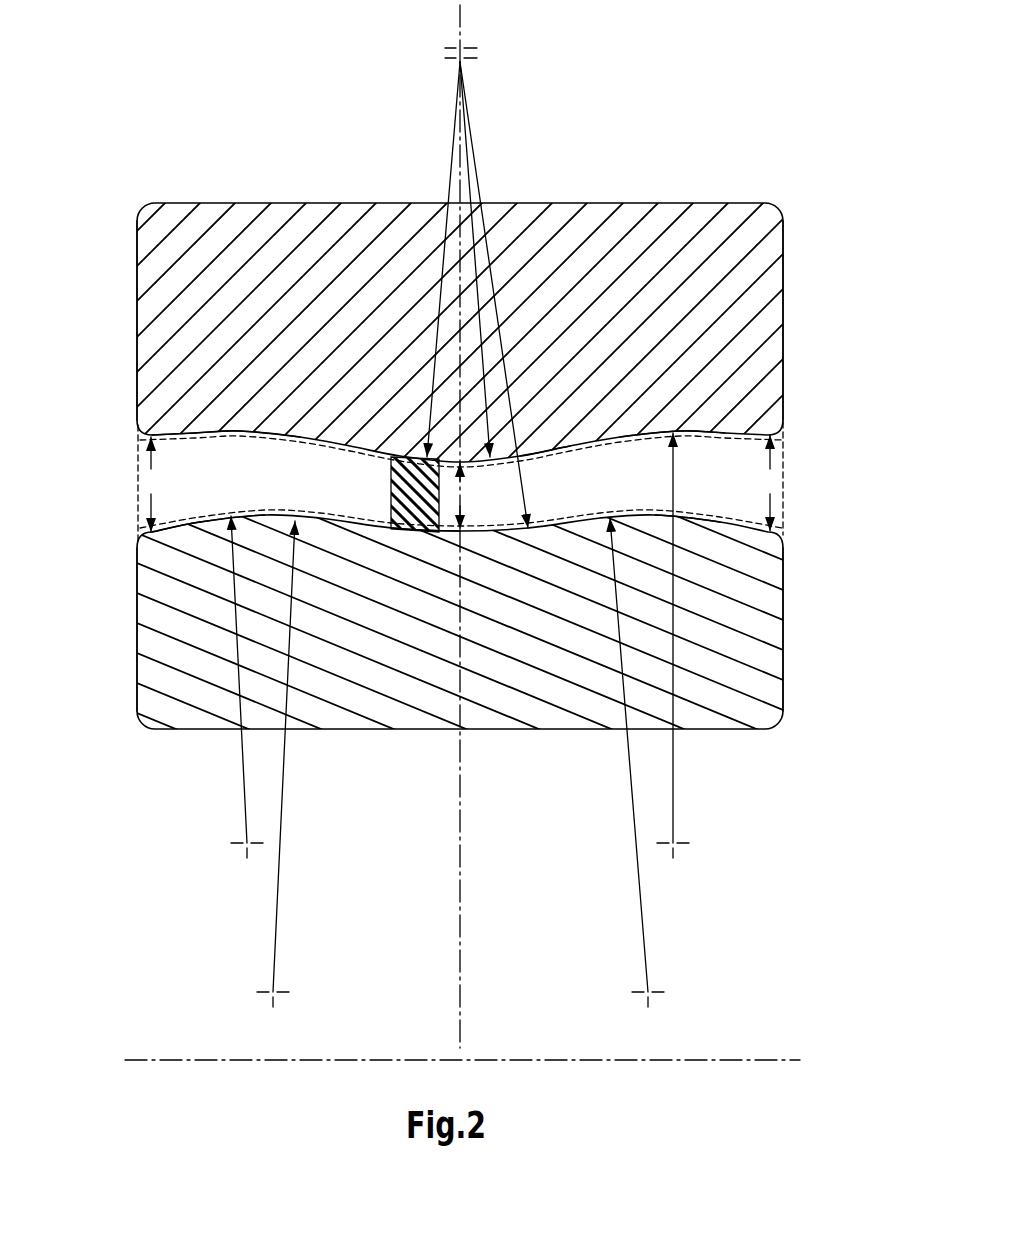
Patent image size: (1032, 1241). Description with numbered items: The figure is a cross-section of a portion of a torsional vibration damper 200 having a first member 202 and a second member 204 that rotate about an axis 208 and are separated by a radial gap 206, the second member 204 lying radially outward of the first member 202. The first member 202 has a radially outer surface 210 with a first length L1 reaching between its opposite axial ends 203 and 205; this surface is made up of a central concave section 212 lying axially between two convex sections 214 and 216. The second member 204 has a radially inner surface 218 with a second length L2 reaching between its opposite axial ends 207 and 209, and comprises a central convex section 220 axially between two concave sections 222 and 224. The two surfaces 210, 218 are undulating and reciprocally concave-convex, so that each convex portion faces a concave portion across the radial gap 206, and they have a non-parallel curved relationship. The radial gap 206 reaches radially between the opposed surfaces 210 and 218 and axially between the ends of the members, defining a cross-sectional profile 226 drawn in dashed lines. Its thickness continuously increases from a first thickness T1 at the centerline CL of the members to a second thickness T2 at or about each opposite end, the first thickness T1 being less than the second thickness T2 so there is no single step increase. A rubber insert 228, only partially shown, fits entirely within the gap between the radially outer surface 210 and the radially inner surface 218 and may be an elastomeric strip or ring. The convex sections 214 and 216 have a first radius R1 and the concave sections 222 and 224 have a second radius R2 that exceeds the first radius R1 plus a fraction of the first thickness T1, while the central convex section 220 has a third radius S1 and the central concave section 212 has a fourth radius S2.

The torsional vibration damper 200 is at (110, 140).
The first member 202 is at (768, 628).
The axial end of first member 203 is at (137, 663).
The second member 204 is at (743, 338).
The axial end of first member 205 is at (786, 567).
The radial gap 206 is at (778, 458).
The axial end of second member 207 is at (137, 283).
The axis 208 is at (707, 1060).
The axial end of second member 209 is at (785, 273).
The radially outer surface 210 is at (185, 538).
The central concave section 212 is at (432, 534).
The convex section 214 is at (222, 520).
The convex section 216 is at (695, 522).
The radially inner surface 218 is at (200, 428).
The central convex section 220 is at (554, 447).
The concave section 222 is at (250, 432).
The concave section 224 is at (687, 432).
The cross-sectional profile 226 is at (133, 487).
The rubber insert 228 is at (420, 500).
The centerline CL is at (462, 23).
The third radius S1 is at (443, 252).
The fourth radius S2 is at (494, 295).
The first thickness T1 is at (462, 496).
The second thickness T2 is at (461, 483).
The first length L1 is at (337, 513).
The second length L2 is at (268, 438).
The first radius R1 is at (460, 762).
The second radius R2 is at (459, 645).